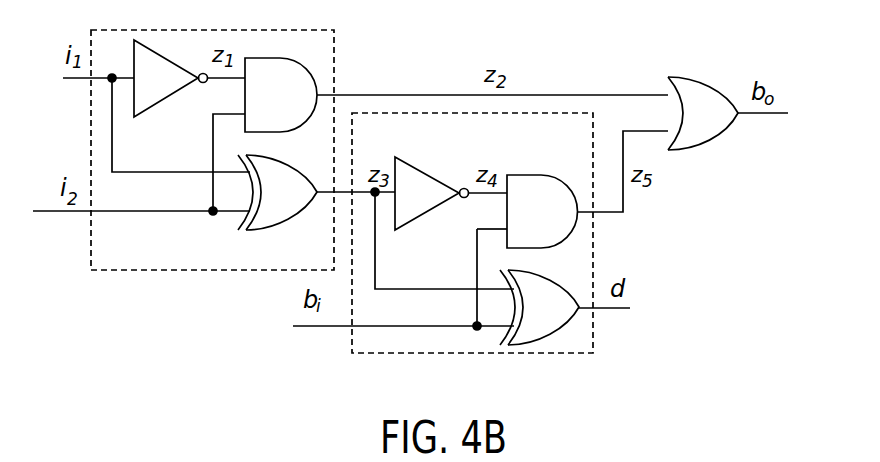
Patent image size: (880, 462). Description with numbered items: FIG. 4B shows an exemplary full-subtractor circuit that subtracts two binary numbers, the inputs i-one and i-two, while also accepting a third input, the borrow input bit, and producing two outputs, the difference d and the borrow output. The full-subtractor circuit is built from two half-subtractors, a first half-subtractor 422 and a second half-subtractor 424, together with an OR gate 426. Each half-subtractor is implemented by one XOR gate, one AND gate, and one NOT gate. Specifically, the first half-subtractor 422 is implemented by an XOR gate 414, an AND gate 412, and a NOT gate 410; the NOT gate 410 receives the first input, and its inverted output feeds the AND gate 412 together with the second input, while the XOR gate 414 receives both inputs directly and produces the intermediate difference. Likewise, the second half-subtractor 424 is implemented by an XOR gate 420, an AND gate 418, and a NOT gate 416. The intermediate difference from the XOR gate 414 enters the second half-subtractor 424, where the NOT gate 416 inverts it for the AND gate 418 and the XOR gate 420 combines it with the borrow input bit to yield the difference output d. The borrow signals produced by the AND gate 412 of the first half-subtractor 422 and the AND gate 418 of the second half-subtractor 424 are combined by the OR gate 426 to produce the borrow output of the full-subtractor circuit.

The NOT gate 410 is at (167, 90).
The AND gate 412 is at (287, 110).
The XOR gate 414 is at (297, 207).
The NOT gate 416 is at (428, 207).
The AND gate 418 is at (550, 222).
The XOR gate 420 is at (558, 322).
The half-subtractor 422 is at (158, 270).
The half-subtractor 424 is at (595, 335).
The OR gate 426 is at (718, 125).